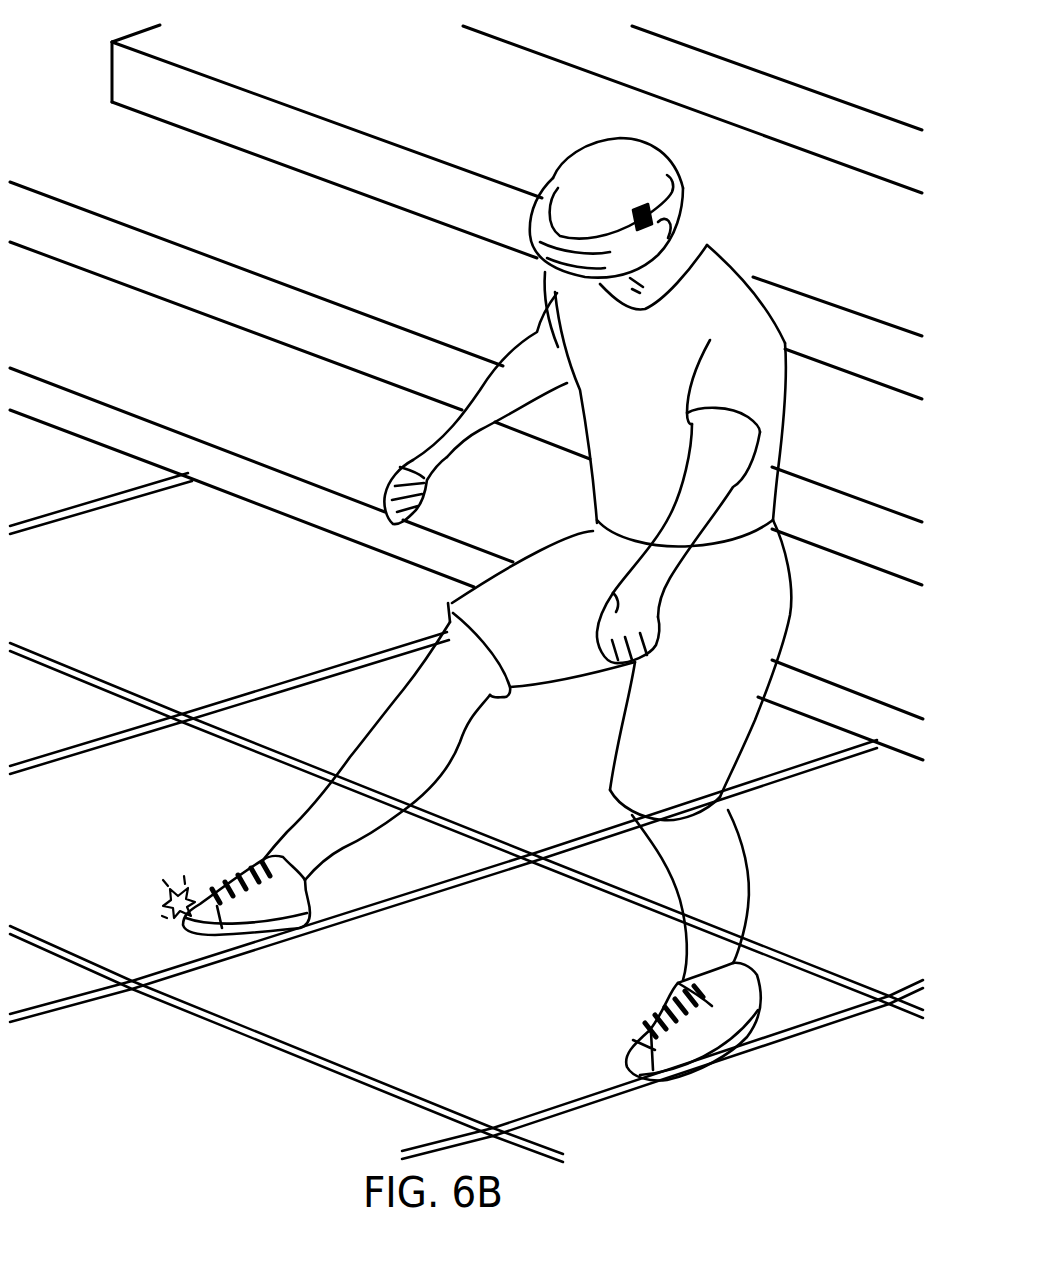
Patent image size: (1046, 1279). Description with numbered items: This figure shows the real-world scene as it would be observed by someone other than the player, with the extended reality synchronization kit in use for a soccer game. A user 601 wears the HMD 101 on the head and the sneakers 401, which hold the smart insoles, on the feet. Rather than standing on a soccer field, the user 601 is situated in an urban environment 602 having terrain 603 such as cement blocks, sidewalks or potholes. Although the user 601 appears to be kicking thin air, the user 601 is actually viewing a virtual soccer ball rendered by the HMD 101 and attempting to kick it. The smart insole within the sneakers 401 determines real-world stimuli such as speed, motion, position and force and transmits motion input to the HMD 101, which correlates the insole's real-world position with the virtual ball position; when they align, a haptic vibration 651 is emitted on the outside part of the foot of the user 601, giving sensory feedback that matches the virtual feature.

The HMD 101 is at (516, 227).
The sneakers 401 is at (325, 904).
The user 601 is at (537, 609).
The urban environment 602 is at (56, 138).
The terrain 603 is at (231, 514).
The haptic vibration 651 is at (142, 900).